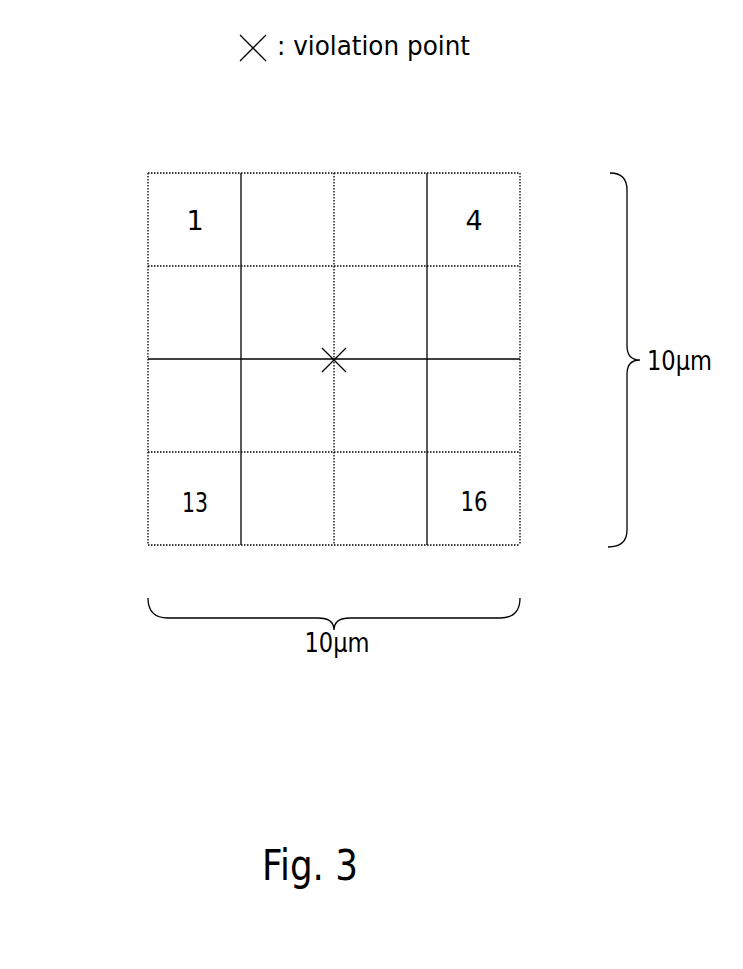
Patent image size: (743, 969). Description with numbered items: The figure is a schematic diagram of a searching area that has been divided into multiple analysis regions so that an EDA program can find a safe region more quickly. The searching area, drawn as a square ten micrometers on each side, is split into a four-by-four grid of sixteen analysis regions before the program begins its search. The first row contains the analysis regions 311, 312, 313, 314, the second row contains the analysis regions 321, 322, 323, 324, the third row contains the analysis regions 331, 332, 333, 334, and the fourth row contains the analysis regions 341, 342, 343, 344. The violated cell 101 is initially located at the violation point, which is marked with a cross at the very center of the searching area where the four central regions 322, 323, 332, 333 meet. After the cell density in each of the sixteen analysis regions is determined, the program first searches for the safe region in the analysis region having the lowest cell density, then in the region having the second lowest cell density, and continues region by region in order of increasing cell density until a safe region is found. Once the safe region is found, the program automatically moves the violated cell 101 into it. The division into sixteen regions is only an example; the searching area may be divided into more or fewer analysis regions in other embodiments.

The violated cell 101 is at (346, 368).
The analysis region 311 is at (148, 235).
The analysis region 312 is at (286, 187).
The analysis region 313 is at (380, 187).
The analysis region 314 is at (518, 236).
The analysis region 321 is at (148, 287).
The analysis region 322 is at (250, 331).
The analysis region 323 is at (418, 330).
The analysis region 324 is at (518, 288).
The analysis region 331 is at (148, 380).
The analysis region 332 is at (250, 423).
The analysis region 333 is at (418, 423).
The analysis region 334 is at (518, 381).
The analysis region 341 is at (148, 515).
The analysis region 342 is at (288, 538).
The analysis region 343 is at (383, 538).
The analysis region 344 is at (518, 516).